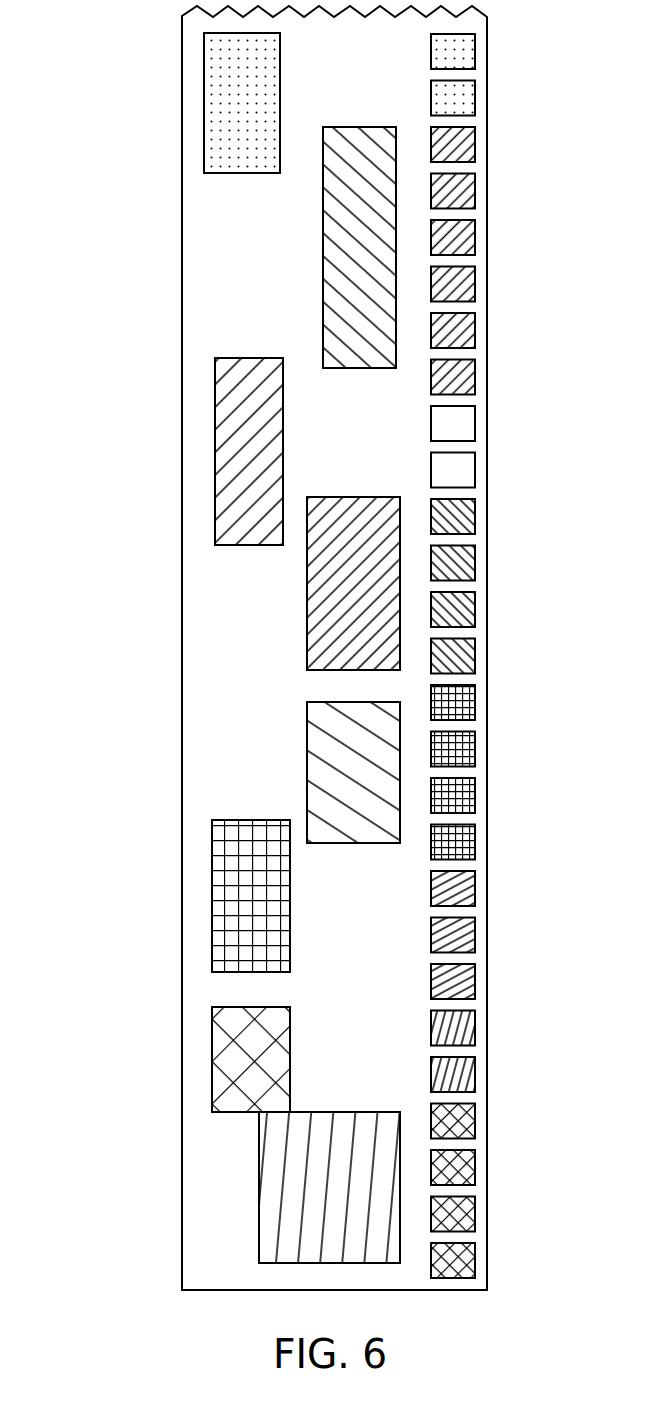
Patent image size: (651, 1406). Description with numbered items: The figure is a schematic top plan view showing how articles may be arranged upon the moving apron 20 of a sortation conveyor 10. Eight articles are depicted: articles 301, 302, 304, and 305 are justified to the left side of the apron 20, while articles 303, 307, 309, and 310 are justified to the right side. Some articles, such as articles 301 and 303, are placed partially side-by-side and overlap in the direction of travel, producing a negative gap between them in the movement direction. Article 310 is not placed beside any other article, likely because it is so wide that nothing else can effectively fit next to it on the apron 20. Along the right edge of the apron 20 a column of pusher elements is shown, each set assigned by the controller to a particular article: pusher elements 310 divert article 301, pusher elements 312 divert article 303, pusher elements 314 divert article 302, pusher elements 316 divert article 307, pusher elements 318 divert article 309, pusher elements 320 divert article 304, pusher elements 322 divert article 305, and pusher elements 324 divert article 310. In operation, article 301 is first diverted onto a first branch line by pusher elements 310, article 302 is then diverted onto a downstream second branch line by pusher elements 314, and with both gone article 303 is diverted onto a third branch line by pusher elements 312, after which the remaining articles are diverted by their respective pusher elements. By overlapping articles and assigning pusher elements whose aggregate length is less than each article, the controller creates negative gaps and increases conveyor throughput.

The sortation conveyor 10 is at (142, 531).
The moving apron 20 is at (182, 652).
The article 301 is at (216, 145).
The article 302 is at (226, 402).
The article 303 is at (323, 213).
The article 304 is at (290, 918).
The article 305 is at (290, 1027).
The article 307 is at (307, 608).
The article 309 is at (307, 751).
The article / pusher elements 310 is at (345, 1112).
The pusher elements 312 is at (475, 146).
The pusher elements 314 is at (475, 424).
The pusher elements 316 is at (475, 518).
The pusher elements 318 is at (475, 704).
The pusher elements 320 is at (475, 890).
The pusher elements 322 is at (475, 1029).
The pusher elements 324 is at (475, 1122).